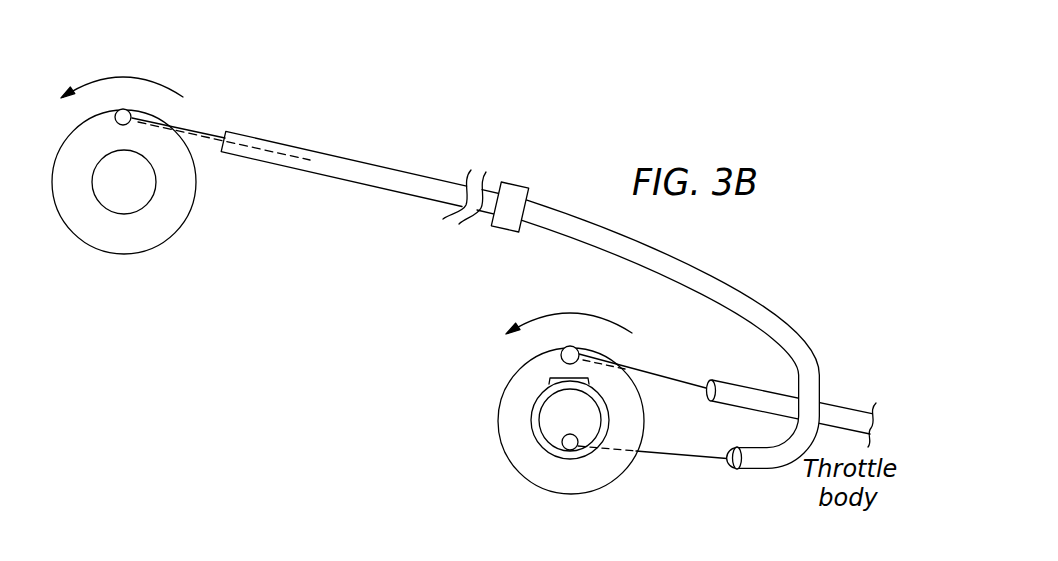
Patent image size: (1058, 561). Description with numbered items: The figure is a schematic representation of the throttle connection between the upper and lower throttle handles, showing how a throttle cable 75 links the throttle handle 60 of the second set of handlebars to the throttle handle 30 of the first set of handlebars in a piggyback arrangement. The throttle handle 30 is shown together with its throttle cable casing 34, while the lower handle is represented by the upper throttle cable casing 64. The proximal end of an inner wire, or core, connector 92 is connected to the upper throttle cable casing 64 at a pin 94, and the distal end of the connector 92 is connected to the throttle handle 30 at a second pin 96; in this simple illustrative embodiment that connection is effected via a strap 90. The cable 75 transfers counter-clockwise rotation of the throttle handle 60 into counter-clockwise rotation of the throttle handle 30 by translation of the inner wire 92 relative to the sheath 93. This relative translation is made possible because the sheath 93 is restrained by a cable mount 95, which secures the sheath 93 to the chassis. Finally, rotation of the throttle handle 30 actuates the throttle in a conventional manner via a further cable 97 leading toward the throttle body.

The throttle handle 30 is at (533, 423).
The throttle cable casing 34 is at (583, 481).
The throttle handle 60 is at (118, 213).
The upper throttle cable casing 64 is at (160, 230).
The throttle cable 75 is at (768, 278).
The strap 90 is at (587, 372).
The inner wire connector 92 is at (203, 136).
The sheath 93 is at (377, 163).
The pin 94 is at (123, 109).
The cable mount 95 is at (510, 182).
The second pin 96 is at (567, 446).
The cable 97 is at (843, 408).